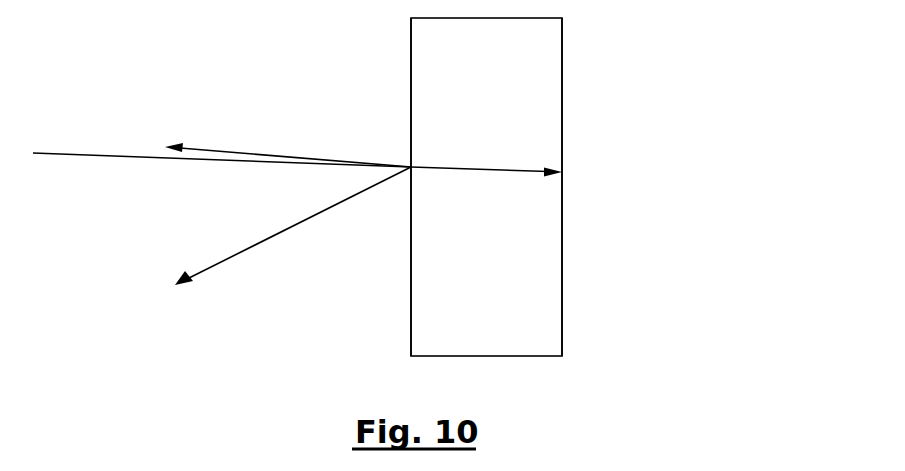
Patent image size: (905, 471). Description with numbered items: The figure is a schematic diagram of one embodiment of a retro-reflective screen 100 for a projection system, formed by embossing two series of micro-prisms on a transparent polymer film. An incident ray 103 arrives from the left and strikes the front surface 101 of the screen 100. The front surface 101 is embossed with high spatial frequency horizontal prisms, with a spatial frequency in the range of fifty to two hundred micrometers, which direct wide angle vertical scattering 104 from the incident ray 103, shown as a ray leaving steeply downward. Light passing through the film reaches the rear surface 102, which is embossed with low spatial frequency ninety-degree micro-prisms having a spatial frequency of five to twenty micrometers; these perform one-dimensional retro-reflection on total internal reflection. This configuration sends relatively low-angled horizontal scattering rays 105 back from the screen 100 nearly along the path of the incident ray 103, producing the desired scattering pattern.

The screen 100 is at (505, 346).
The front surface 101 is at (398, 318).
The rear surface 102 is at (577, 172).
The incident ray 103 is at (147, 169).
The wide angle vertical scattering 104 is at (237, 268).
The horizontal scattering rays 105 is at (270, 145).